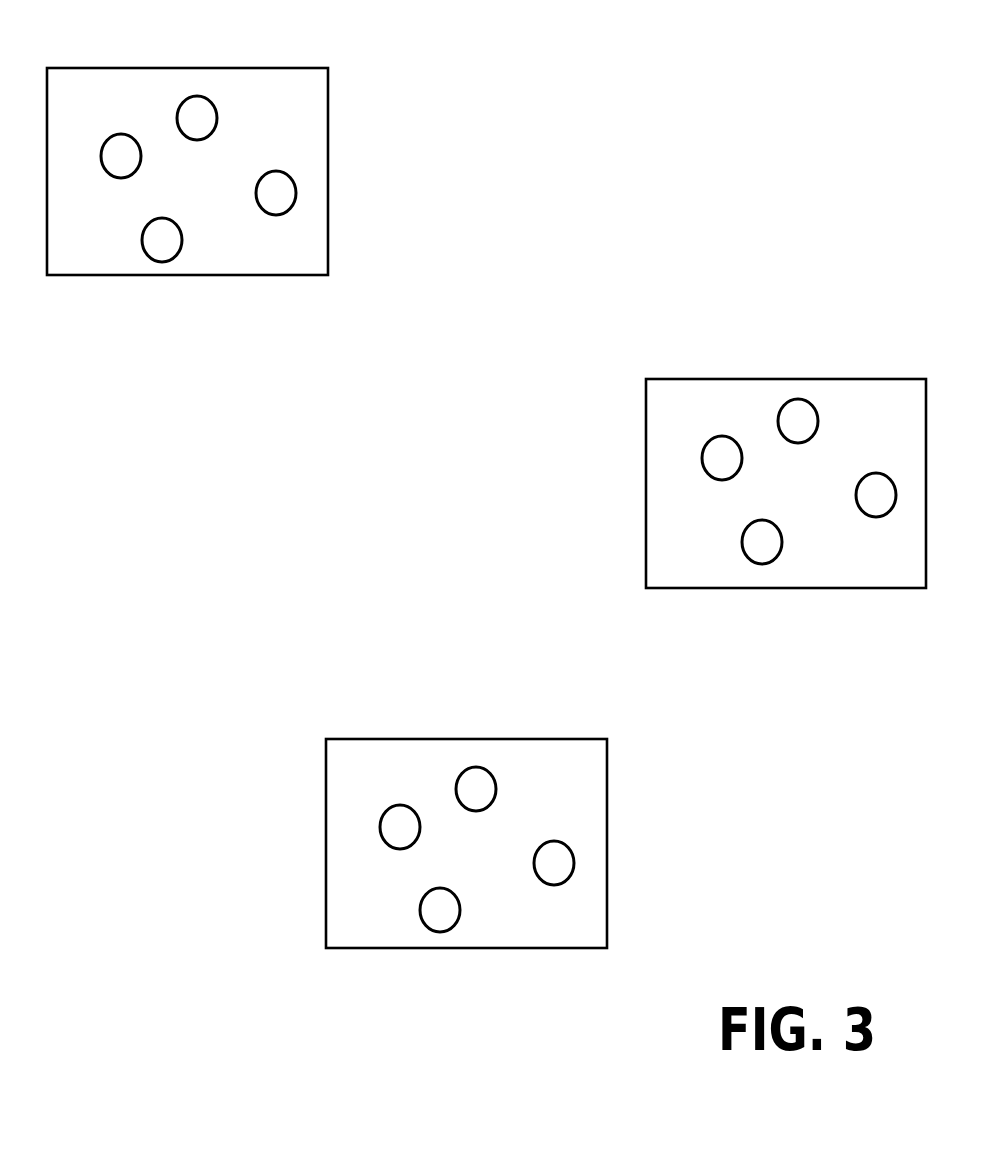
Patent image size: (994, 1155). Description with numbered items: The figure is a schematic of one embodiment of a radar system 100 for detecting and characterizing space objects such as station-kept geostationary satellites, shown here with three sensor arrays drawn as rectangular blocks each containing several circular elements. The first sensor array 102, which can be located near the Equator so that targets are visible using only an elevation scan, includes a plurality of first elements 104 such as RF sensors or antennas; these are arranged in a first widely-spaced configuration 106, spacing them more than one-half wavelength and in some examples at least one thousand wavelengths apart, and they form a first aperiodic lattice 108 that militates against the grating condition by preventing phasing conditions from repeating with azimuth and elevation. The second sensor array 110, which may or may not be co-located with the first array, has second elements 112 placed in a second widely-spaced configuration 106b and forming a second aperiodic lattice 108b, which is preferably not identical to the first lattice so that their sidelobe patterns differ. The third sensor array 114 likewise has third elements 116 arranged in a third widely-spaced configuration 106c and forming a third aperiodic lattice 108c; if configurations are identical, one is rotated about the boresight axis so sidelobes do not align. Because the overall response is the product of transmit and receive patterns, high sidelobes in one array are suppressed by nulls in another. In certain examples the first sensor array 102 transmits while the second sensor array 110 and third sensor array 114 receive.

The radar system 100 is at (733, 157).
The first sensor array 102 is at (330, 98).
The first elements 104 is at (116, 331).
The first aperiodic lattice 108 is at (158, 263).
The first widely-spaced configuration 106 is at (182, 270).
The second sensor array 110 is at (816, 378).
The second elements 112 is at (577, 411).
The second aperiodic lattice 108b is at (700, 458).
The second widely-spaced configuration 106b is at (654, 467).
The third sensor array 114 is at (325, 810).
The third elements 116 is at (326, 737).
The third aperiodic lattice 108c is at (400, 803).
The third widely-spaced configuration 106c is at (403, 845).